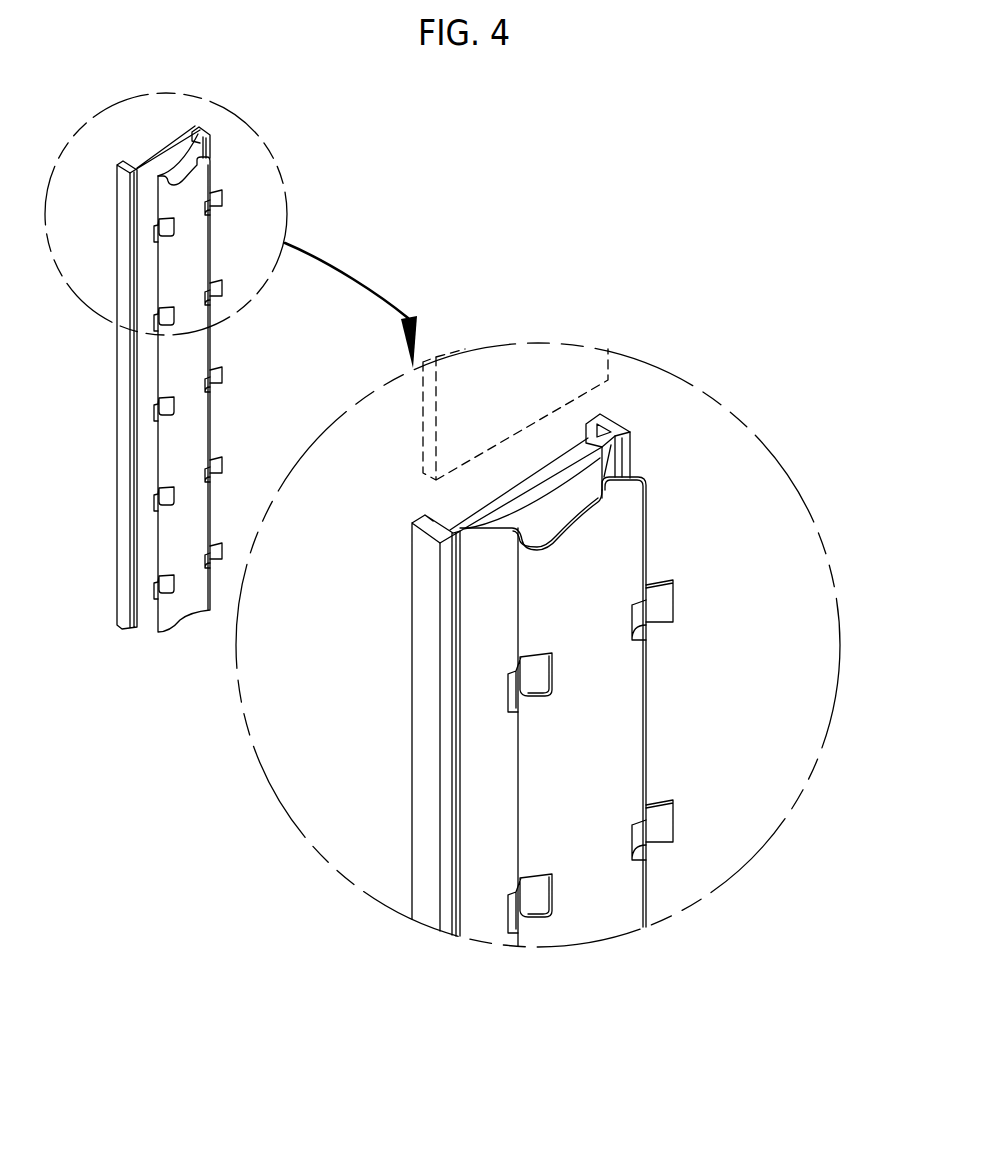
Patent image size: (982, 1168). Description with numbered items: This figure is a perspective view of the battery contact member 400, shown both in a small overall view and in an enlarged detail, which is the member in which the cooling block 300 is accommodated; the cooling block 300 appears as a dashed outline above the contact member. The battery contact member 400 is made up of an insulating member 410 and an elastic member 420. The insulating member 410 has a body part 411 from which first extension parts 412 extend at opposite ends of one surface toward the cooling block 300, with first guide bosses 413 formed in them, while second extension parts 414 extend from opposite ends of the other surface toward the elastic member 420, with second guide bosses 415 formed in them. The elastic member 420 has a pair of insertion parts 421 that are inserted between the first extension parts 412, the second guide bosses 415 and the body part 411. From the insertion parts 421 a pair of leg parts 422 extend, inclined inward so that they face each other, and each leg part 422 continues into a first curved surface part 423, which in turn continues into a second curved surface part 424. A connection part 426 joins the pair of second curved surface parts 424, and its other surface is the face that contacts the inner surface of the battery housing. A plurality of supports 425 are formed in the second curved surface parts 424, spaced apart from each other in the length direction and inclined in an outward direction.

The cooling block 300 is at (607, 355).
The battery contact member 400 is at (470, 176).
The insulating member 410 is at (210, 344).
The body part 411 is at (472, 508).
The first extension parts 412 is at (606, 447).
The first guide bosses 413 is at (595, 413).
The second extension parts 414 is at (613, 470).
The second guide bosses 415 is at (626, 478).
The elastic member 420 is at (228, 224).
The insertion part 421 is at (410, 525).
The leg part 422 is at (495, 528).
The first curved surface part 423 is at (522, 532).
The second curved surface part 424 is at (650, 485).
The support 425 is at (673, 827).
The connection part 426 is at (588, 880).